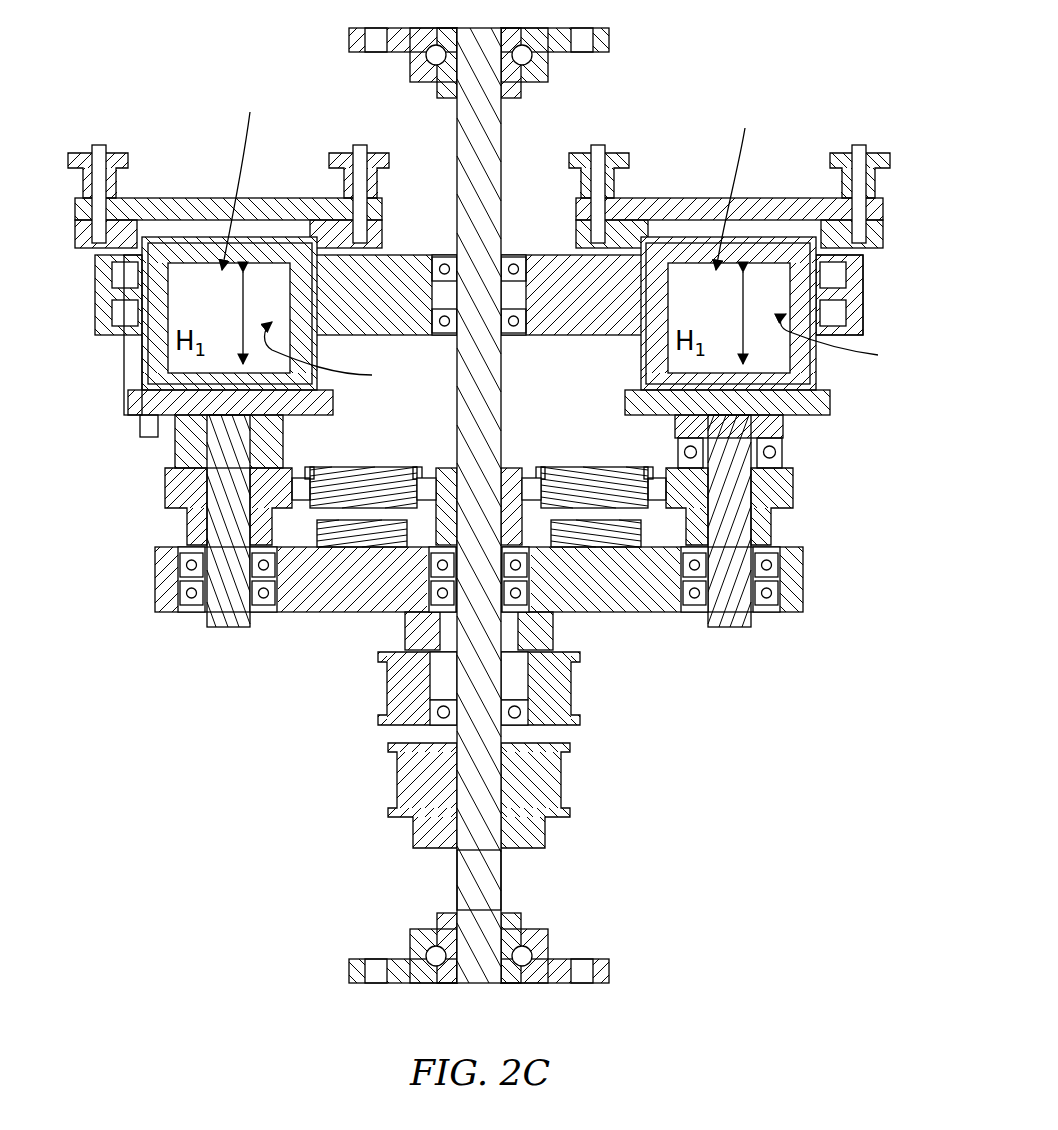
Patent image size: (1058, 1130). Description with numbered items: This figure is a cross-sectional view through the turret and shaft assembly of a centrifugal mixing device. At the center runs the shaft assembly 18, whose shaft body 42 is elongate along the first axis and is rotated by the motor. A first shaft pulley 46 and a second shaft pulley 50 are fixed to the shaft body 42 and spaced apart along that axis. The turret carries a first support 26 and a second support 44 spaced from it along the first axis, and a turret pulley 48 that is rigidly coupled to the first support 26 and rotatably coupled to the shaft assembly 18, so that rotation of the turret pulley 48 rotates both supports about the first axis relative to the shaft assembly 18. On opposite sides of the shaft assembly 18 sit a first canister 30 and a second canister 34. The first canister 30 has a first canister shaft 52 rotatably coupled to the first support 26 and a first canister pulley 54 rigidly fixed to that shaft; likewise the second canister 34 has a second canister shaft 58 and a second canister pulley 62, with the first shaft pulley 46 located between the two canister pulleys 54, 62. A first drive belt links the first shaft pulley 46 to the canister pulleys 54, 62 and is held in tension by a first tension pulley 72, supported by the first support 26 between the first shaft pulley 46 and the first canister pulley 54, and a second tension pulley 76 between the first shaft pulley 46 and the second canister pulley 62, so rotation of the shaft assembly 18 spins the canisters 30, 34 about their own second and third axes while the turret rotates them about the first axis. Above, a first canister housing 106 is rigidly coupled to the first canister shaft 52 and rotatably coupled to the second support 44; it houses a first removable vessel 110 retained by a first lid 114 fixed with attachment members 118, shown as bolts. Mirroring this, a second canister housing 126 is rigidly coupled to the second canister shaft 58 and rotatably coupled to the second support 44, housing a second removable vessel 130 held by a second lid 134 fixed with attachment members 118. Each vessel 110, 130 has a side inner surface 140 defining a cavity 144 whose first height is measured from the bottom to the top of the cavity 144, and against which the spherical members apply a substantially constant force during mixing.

The shaft assembly 18 is at (505, 880).
The first support 26 is at (807, 588).
The first canister 30 is at (840, 365).
The second canister 34 is at (125, 393).
The shaft body 42 is at (465, 877).
The second support 44 is at (860, 295).
The first shaft pulley 46 is at (515, 468).
The turret pulley 48 is at (580, 720).
The second shaft pulley 50 is at (570, 812).
The first canister shaft 52 is at (732, 628).
The first canister pulley 54 is at (793, 505).
The second canister shaft 58 is at (244, 628).
The second canister pulley 62 is at (165, 505).
The first tension pulley 72 is at (578, 467).
The second tension pulley 76 is at (362, 467).
The first canister housing 106 is at (810, 400).
The first removable vessel 110 is at (775, 290).
The first lid 114 is at (670, 210).
The attachment members 118 is at (95, 146).
The second canister housing 126 is at (155, 437).
The second removable vessel 130 is at (185, 290).
The second lid 134 is at (268, 210).
The inner surface 140 is at (594, 350).
The cavity 144 is at (496, 175).